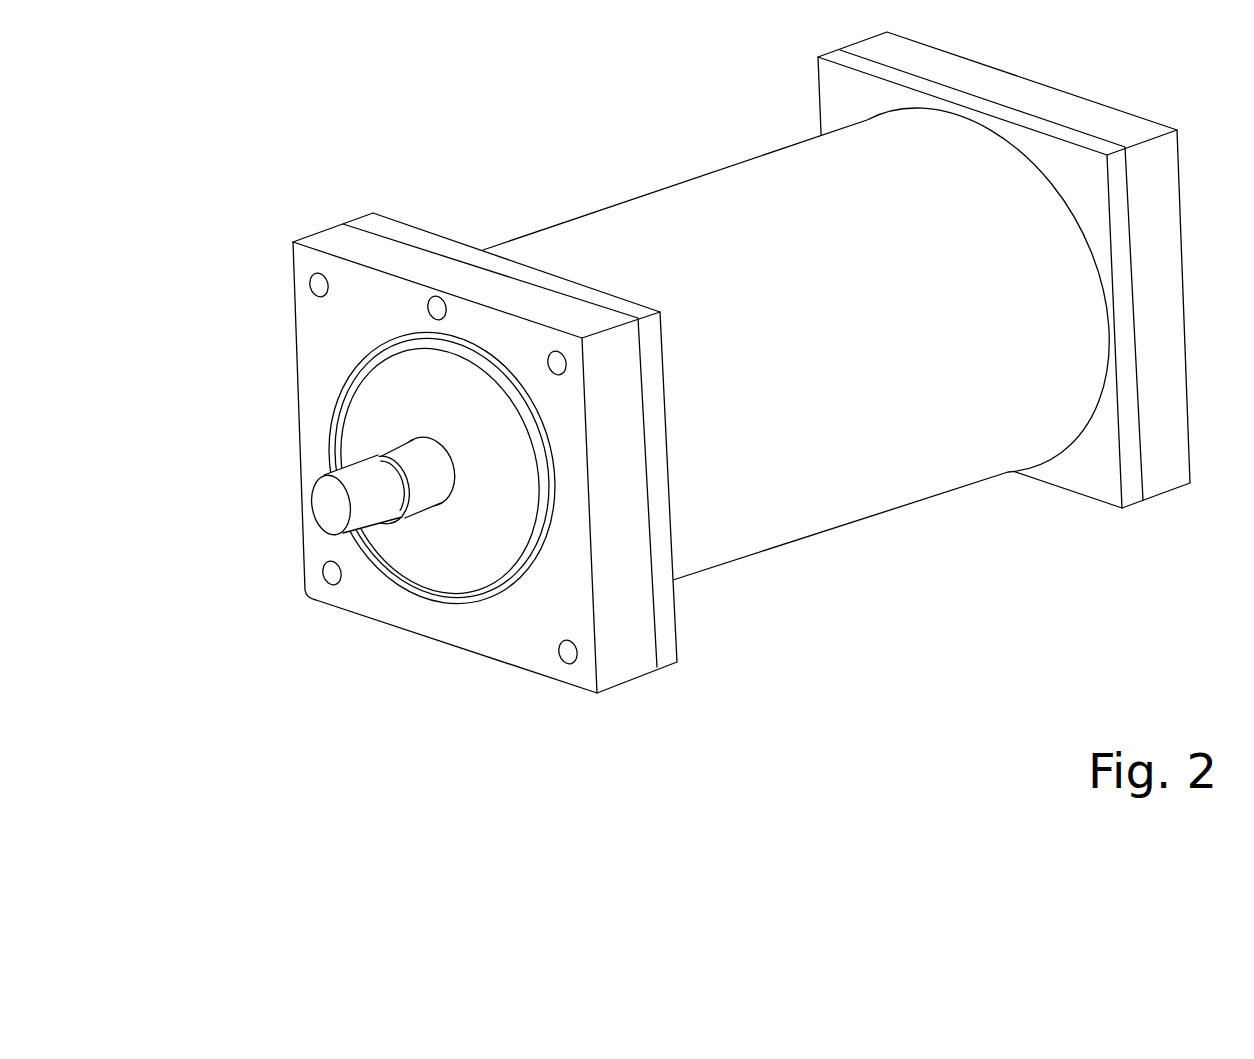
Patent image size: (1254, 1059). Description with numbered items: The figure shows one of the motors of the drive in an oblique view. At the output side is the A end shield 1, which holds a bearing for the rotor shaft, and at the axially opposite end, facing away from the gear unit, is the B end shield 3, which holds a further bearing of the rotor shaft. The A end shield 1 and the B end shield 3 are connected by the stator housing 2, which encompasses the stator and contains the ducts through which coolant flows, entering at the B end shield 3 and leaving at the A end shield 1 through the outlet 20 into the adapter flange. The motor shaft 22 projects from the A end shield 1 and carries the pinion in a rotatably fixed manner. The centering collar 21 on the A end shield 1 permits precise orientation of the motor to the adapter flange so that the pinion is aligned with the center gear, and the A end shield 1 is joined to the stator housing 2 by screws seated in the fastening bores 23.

The A end shield 1 is at (623, 642).
The stator housing 2 is at (780, 466).
The B end shield 3 is at (1157, 443).
The outlet 20 is at (437, 310).
The centering collar 21 is at (347, 373).
The motor shaft 22 is at (342, 512).
The fastening bores 23 is at (568, 653).